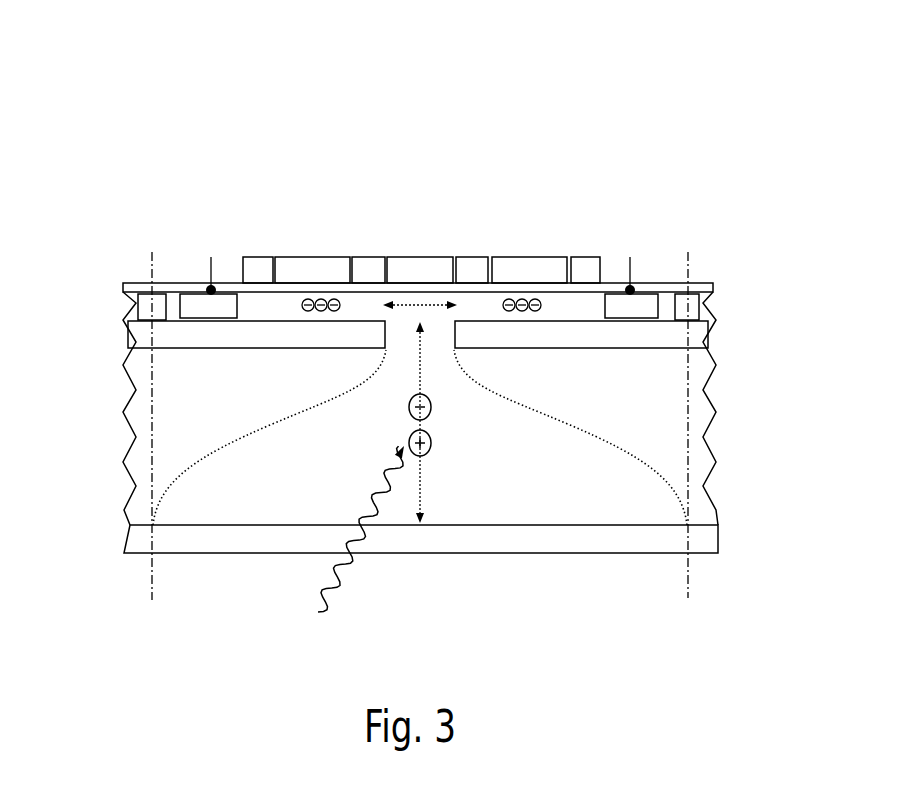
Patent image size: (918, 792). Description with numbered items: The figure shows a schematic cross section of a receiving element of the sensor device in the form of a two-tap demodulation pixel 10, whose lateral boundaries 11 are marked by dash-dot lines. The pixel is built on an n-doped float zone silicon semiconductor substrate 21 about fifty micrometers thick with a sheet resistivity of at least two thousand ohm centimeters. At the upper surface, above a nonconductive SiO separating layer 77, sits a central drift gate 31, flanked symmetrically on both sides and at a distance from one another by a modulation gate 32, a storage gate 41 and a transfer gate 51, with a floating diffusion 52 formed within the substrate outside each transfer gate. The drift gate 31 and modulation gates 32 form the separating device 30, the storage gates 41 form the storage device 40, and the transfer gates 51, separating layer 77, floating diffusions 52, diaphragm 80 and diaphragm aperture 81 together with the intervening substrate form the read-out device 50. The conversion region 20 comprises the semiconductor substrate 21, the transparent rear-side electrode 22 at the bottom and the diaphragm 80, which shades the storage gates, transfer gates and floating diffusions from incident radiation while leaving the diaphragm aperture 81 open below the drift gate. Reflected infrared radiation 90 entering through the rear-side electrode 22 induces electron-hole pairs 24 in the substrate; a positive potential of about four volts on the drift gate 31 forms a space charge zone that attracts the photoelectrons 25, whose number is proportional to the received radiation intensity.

The pixel 10 is at (344, 86).
The lateral boundaries 11 is at (150, 582).
The conversion region 20 is at (104, 469).
The semiconductor substrate 21 is at (275, 450).
The rear-side electrode 22 is at (130, 538).
The electron-hole pairs 24 is at (427, 429).
The photoelectrons 25 is at (523, 312).
The separating device 30 is at (254, 120).
The drift gate 31 is at (438, 257).
The modulation gate 32 is at (362, 257).
The storage device 40 is at (180, 161).
The storage gate 41 is at (300, 257).
The read-out device 50 is at (127, 266).
The transfer gate 51 is at (253, 257).
The floating diffusion 52 is at (187, 293).
The separating layer 77 is at (608, 280).
The diaphragm 80 is at (137, 338).
The diaphragm aperture 81 is at (400, 327).
The reflected and/or backscattered radiation 90 is at (318, 568).